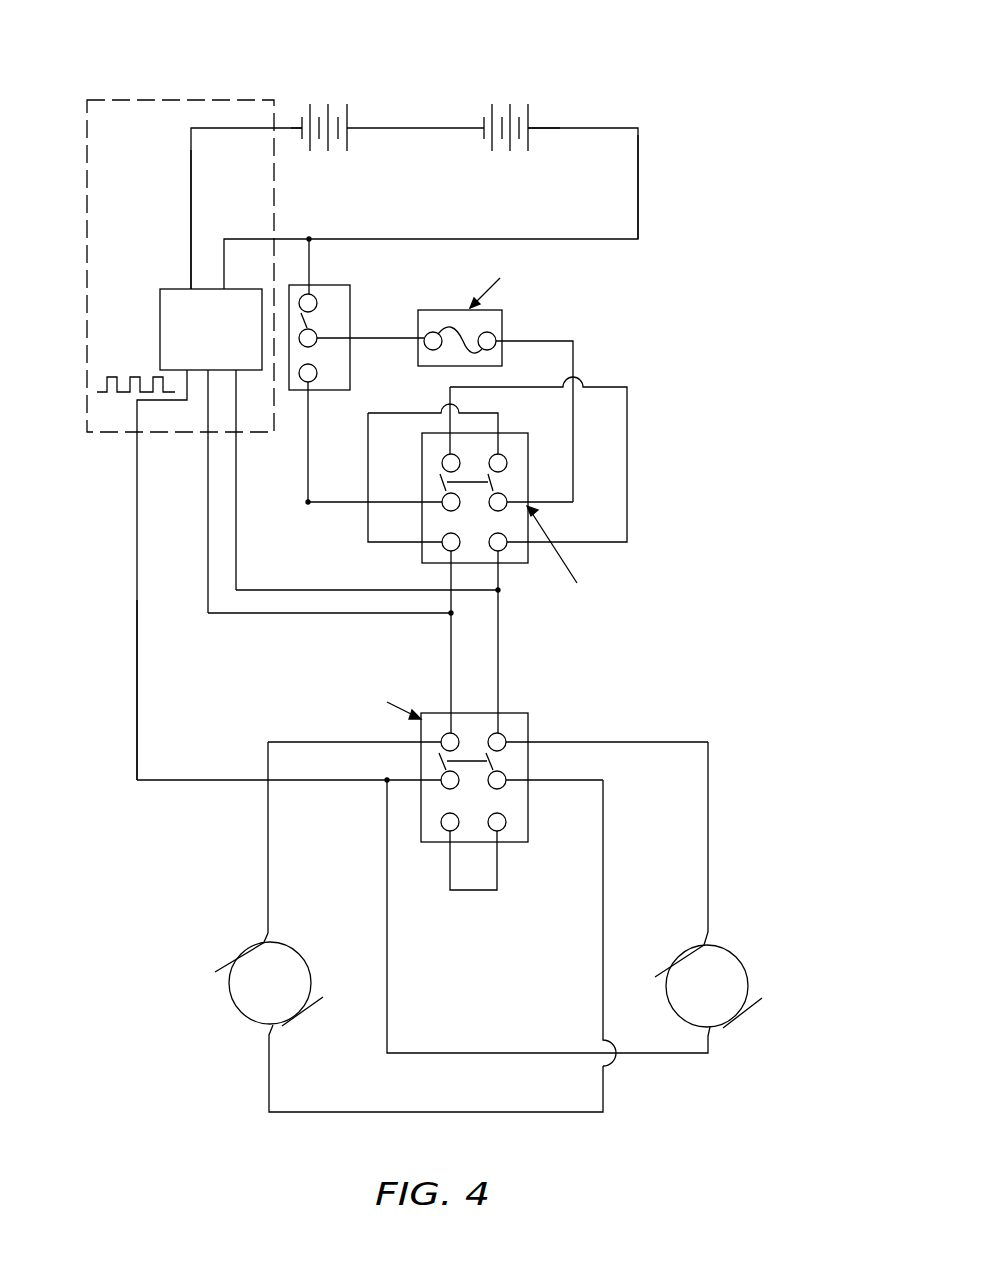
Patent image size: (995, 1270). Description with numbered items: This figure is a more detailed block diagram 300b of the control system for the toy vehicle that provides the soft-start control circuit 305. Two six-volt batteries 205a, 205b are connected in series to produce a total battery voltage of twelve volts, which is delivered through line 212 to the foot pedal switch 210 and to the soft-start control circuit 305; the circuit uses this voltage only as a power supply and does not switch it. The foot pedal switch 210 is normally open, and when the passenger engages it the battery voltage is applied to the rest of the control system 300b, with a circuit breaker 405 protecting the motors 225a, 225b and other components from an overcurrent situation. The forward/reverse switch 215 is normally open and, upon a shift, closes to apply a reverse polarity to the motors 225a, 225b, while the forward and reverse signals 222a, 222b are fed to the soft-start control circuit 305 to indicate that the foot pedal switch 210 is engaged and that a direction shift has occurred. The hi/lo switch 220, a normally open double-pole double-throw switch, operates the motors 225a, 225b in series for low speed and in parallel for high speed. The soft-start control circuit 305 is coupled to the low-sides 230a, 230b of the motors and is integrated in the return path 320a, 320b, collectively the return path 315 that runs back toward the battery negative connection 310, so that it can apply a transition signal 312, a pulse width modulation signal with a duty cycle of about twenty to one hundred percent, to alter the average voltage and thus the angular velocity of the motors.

The block diagram 300b is at (402, 28).
The six-volt battery 205a is at (349, 108).
The six-volt battery 205b is at (530, 108).
The battery negative terminal connection 310 is at (284, 132).
The return path 315 is at (558, 130).
The line 212 is at (641, 200).
The return path 320b is at (190, 213).
The soft-start control circuit 305 is at (160, 311).
The transition signal 312 is at (118, 393).
The foot pedal switch 210 is at (350, 292).
The circuit breaker 405 is at (502, 326).
The forward/reverse switch 215 is at (510, 565).
The forward signal 222a is at (262, 586).
The reverse signal 222b is at (262, 618).
The return path 320a is at (137, 680).
The hi/lo switch 220 is at (521, 714).
The motor 225a is at (740, 960).
The motor 225b is at (284, 946).
The low-side of motor 230a is at (712, 1042).
The low-side of motor 230b is at (273, 1043).